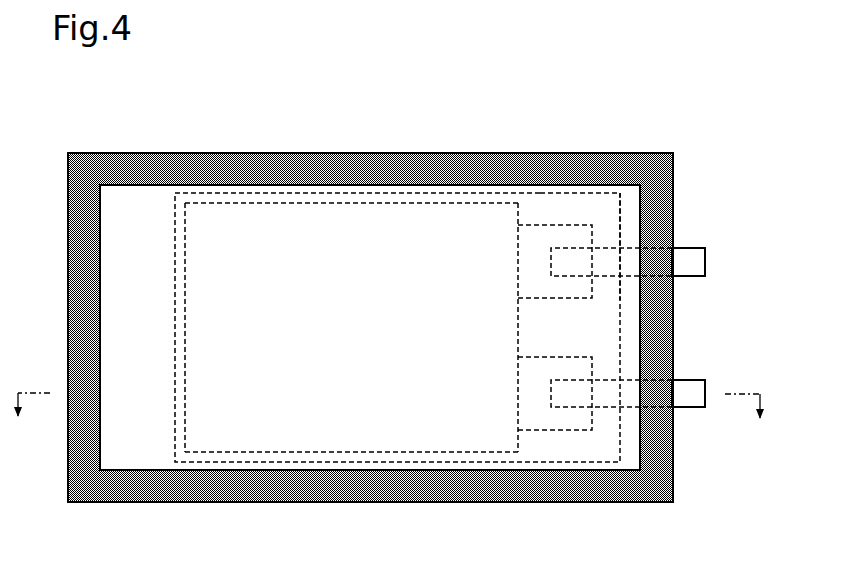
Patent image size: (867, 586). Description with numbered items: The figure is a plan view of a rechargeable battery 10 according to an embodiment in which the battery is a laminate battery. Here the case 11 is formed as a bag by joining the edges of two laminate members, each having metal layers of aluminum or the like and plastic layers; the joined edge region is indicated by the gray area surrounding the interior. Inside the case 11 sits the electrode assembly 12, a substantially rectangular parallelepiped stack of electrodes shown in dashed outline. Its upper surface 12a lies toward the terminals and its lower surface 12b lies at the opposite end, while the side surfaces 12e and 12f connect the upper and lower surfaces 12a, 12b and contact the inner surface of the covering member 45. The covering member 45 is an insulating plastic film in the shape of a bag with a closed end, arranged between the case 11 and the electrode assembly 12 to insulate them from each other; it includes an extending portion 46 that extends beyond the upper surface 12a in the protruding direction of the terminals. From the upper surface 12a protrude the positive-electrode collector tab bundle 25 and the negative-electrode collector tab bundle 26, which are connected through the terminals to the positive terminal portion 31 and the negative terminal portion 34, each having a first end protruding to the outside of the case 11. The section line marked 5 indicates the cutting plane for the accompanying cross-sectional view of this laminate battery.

The rechargeable battery 10 is at (628, 118).
The case 11 is at (630, 501).
The electrode assembly 12 is at (243, 453).
The upper surface 12a is at (517, 338).
The lower surface 12b is at (186, 338).
The side surface 12e is at (391, 203).
The side surface 12f is at (352, 462).
The positive-electrode collector tab bundle 25 is at (542, 225).
The negative-electrode collector tab bundle 26 is at (542, 432).
The positive terminal portion 31 is at (695, 255).
The negative terminal portion 34 is at (697, 407).
The covering member 45 is at (308, 193).
The extending portion 46 is at (575, 193).
The section line for Fig. 5 is at (388, 424).